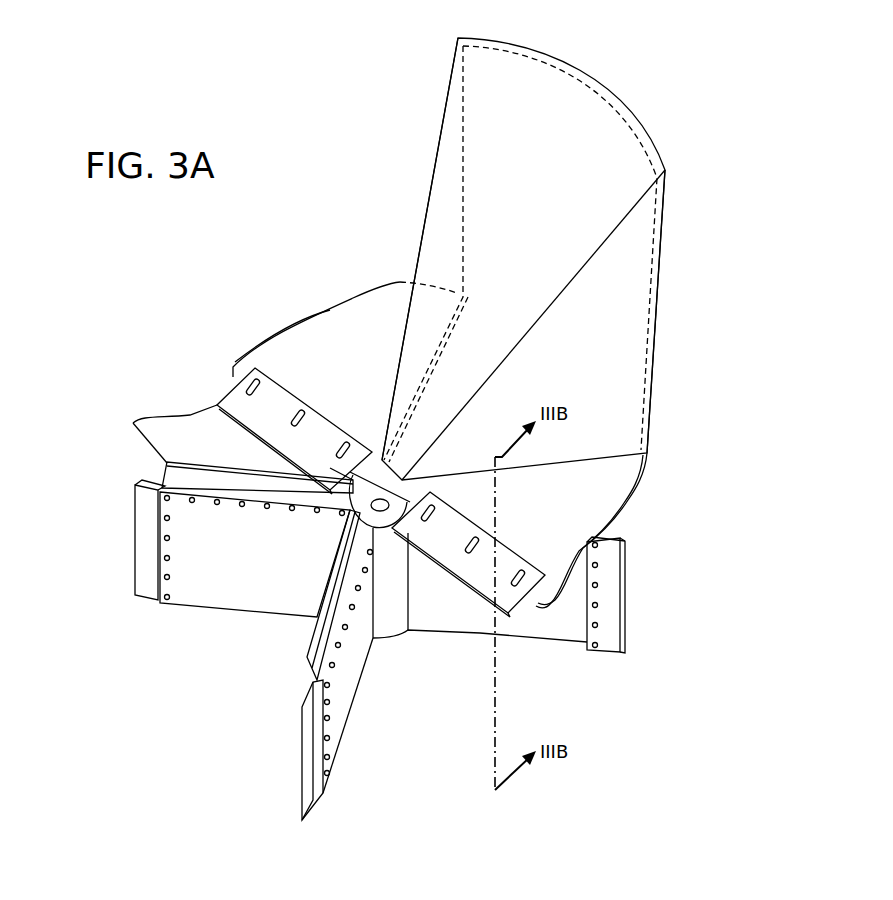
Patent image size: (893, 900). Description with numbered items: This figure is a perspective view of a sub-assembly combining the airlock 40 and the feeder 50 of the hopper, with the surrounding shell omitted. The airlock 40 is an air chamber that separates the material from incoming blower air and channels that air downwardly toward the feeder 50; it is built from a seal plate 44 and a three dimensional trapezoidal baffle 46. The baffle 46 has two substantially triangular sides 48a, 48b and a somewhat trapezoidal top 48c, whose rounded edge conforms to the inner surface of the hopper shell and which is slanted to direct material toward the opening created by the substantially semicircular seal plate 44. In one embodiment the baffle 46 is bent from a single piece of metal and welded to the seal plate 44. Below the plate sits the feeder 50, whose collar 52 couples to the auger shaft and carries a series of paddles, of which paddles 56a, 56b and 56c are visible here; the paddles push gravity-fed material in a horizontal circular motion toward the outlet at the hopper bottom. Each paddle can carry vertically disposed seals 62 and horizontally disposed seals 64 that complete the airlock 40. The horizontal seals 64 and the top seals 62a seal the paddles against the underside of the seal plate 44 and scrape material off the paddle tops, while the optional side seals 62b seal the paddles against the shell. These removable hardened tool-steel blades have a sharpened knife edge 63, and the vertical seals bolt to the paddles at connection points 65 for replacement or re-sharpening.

The airlock 40 is at (374, 128).
The seal plate 44 is at (310, 345).
The baffle 46 is at (612, 355).
The triangular shaped side 48a is at (436, 230).
The triangular shaped side 48b is at (632, 266).
The top 48c is at (582, 169).
The feeder 50 is at (114, 557).
The collar 52 is at (390, 618).
The paddle 56a is at (270, 556).
The paddle 56b is at (345, 690).
The paddle 56c is at (558, 630).
The vertical seal 62 is at (300, 660).
The top seal 62a is at (246, 490).
The side seal 62b is at (148, 598).
The knife edge 63 is at (135, 510).
The horizontal seal 64 is at (255, 370).
The connection point 65 is at (167, 558).